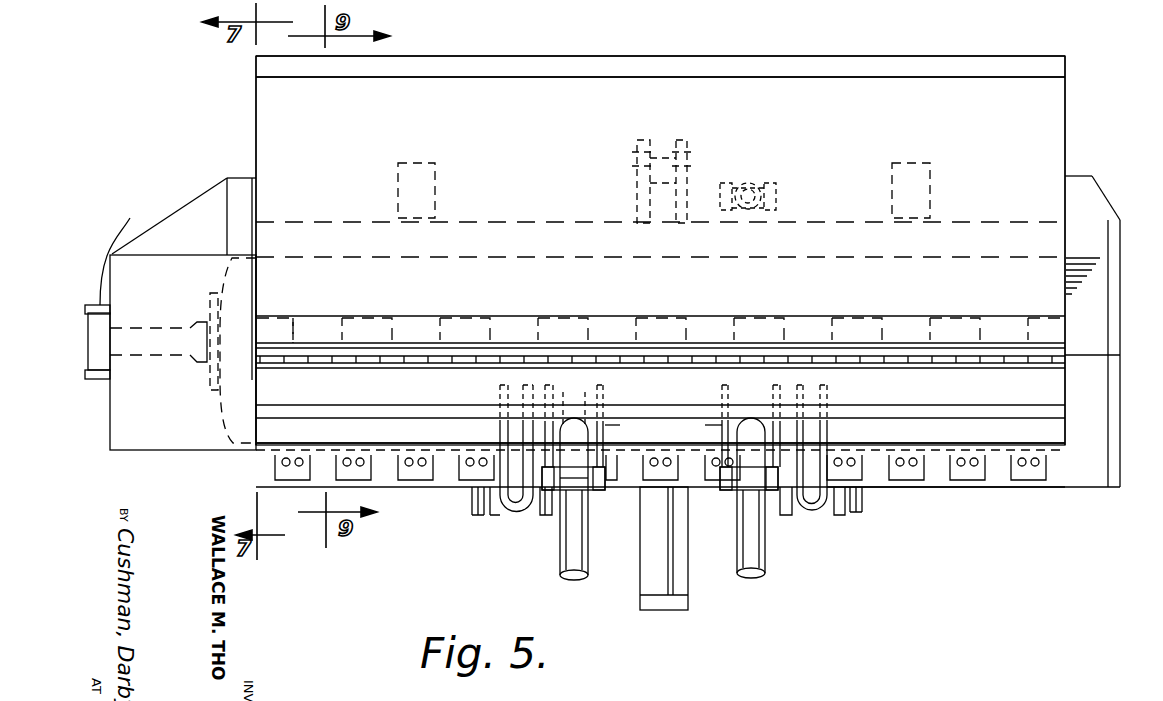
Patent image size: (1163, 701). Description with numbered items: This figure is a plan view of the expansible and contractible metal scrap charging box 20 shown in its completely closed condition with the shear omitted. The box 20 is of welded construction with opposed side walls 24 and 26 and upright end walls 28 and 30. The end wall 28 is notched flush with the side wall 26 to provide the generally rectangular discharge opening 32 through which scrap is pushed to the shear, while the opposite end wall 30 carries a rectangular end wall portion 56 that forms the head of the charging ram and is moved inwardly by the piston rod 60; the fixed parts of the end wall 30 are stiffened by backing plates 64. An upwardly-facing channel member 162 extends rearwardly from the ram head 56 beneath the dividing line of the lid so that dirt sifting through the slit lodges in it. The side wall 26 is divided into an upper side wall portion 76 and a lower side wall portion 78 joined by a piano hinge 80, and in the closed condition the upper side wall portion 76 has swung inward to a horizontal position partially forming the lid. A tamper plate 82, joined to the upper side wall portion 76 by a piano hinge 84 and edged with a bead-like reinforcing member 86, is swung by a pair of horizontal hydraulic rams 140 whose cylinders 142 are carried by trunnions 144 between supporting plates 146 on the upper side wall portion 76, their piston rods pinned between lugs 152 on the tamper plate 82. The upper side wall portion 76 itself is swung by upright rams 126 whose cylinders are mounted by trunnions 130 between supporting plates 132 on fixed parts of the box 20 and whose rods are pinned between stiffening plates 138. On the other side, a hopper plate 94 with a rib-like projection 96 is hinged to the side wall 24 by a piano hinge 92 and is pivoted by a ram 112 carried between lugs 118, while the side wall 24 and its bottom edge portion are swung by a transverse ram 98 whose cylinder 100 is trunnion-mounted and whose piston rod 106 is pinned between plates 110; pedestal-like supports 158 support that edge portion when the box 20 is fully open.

The charging box 20 is at (1093, 146).
The side wall 24 is at (588, 260).
The side wall 26 is at (960, 490).
The end wall 28 is at (1065, 203).
The end wall 30 is at (258, 222).
The discharge opening 32 is at (1097, 428).
The end wall portion 56 is at (256, 387).
The piston rod 60 is at (160, 335).
The backing plates 64 is at (207, 196).
The upper side wall portion 76 is at (1007, 430).
The lower side wall portion 78 is at (906, 487).
The piano hinge 80 is at (388, 462).
The tamper plate 82 is at (1055, 398).
The piano hinge 84 is at (1010, 358).
The reinforcing member 86 is at (915, 417).
The piano hinge 92 is at (965, 345).
The hopper plate 94 is at (643, 96).
The rib-like projection 96 is at (940, 66).
The hydraulic ram 98 is at (641, 562).
The cylinder 100 is at (688, 574).
The piston rod 106 is at (637, 212).
The plates 110 is at (676, 140).
The hydraulic ram 112 is at (748, 182).
The lugs 118 is at (778, 217).
The hydraulic rams 126 is at (516, 520).
The trunnions 130 is at (498, 522).
The supporting plates 132 is at (478, 517).
The reinforcing and stiffening plates 138 is at (500, 428).
The hydraulic rams 140 is at (558, 554).
The cylinder 142 is at (588, 548).
The trunnions 144 is at (592, 492).
The supporting plates 146 is at (605, 428).
The lugs 152 is at (575, 397).
The pedestal-like supports 158 is at (435, 213).
The channel member 162 is at (107, 296).